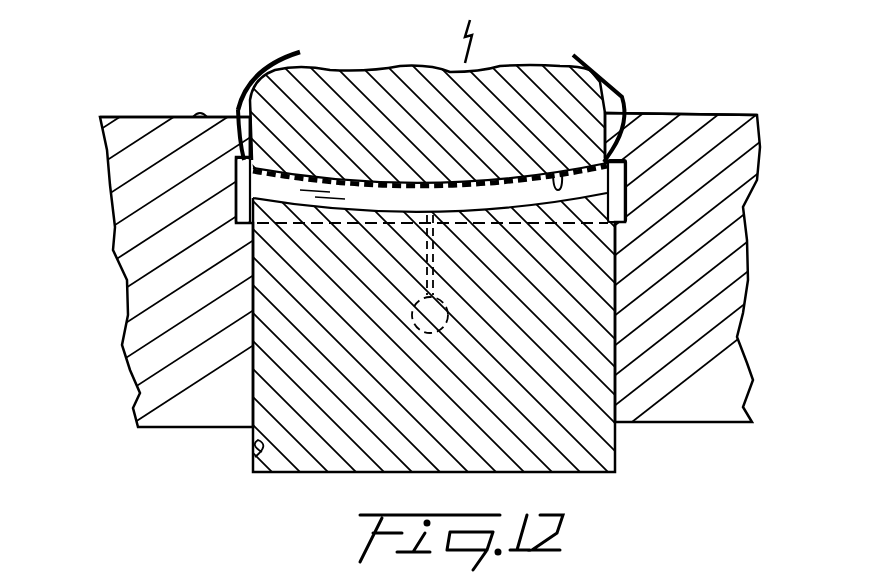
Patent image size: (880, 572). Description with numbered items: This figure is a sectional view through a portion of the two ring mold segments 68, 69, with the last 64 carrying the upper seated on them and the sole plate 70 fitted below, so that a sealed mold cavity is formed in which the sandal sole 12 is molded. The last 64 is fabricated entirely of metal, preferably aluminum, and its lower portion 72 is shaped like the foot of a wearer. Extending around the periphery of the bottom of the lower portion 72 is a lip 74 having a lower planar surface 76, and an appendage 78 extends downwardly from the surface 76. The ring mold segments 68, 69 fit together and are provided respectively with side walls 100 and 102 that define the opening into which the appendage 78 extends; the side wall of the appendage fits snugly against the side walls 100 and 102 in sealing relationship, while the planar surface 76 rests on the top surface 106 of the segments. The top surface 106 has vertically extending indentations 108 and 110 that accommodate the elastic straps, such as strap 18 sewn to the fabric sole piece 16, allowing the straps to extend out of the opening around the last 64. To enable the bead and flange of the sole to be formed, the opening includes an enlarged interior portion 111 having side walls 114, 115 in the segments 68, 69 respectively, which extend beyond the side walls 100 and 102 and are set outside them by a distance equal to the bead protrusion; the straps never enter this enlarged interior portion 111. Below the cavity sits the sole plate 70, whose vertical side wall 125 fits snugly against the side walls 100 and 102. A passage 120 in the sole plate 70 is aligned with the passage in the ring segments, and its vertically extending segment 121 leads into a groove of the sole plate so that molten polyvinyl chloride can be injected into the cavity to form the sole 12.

The sole 12 is at (508, 197).
The sole piece 16 is at (557, 172).
The strap 18 is at (233, 107).
The last 64 is at (472, 31).
The ring mold segment 68 is at (120, 187).
The ring mold segment 69 is at (733, 255).
The sole plate 70 is at (613, 457).
The lower portion 72 is at (417, 72).
The lip 74 is at (255, 103).
The lower planar surface 76 is at (240, 103).
The appendage 78 is at (592, 135).
The side wall 100 is at (250, 150).
The side wall 102 is at (622, 158).
The top surface 106 is at (123, 117).
The indentation 108 is at (200, 117).
The indentation 110 is at (637, 145).
The enlarged interior portion 111 is at (237, 200).
The side wall 114 is at (237, 208).
The side wall 115 is at (633, 195).
The passage 120 is at (450, 313).
The vertically extending segment 121 is at (437, 255).
The vertical side wall 125 is at (257, 457).